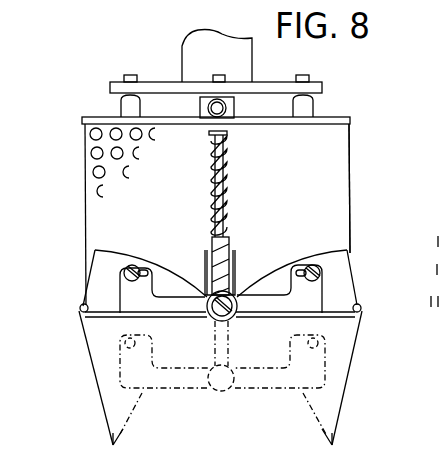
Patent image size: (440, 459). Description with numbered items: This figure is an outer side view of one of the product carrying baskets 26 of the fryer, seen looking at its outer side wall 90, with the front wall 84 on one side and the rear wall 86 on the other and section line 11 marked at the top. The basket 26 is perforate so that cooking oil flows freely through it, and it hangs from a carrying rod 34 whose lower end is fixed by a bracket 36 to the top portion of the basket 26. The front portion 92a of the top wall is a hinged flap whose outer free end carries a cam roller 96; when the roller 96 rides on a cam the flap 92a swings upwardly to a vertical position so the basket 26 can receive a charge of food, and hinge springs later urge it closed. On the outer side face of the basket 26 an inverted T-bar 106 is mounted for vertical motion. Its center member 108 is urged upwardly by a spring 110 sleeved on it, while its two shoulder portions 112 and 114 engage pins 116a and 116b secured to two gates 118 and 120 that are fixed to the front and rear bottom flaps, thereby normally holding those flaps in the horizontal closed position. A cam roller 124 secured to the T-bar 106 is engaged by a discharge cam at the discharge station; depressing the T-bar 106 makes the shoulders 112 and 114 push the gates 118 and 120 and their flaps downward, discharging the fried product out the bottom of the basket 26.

The section line 11 is at (100, 91).
The basket 26 is at (209, 398).
The carrying rod 34 is at (243, 63).
The bracket 36 is at (167, 87).
The front wall 84 is at (86, 201).
The rear wall 86 is at (353, 211).
The outer side wall 90 is at (334, 205).
The front portion of top wall 92a is at (325, 114).
The cam roller 96 is at (226, 113).
The inverted T-bar 106 is at (247, 322).
The center member 108 is at (227, 208).
The spring 110 is at (224, 236).
The shoulder portion 112 is at (167, 303).
The shoulder portion 114 is at (285, 303).
The pin 116a is at (124, 273).
The pin 116b is at (280, 268).
The gate 118 is at (342, 278).
The gate 120 is at (96, 284).
The cam roller 124 is at (208, 323).